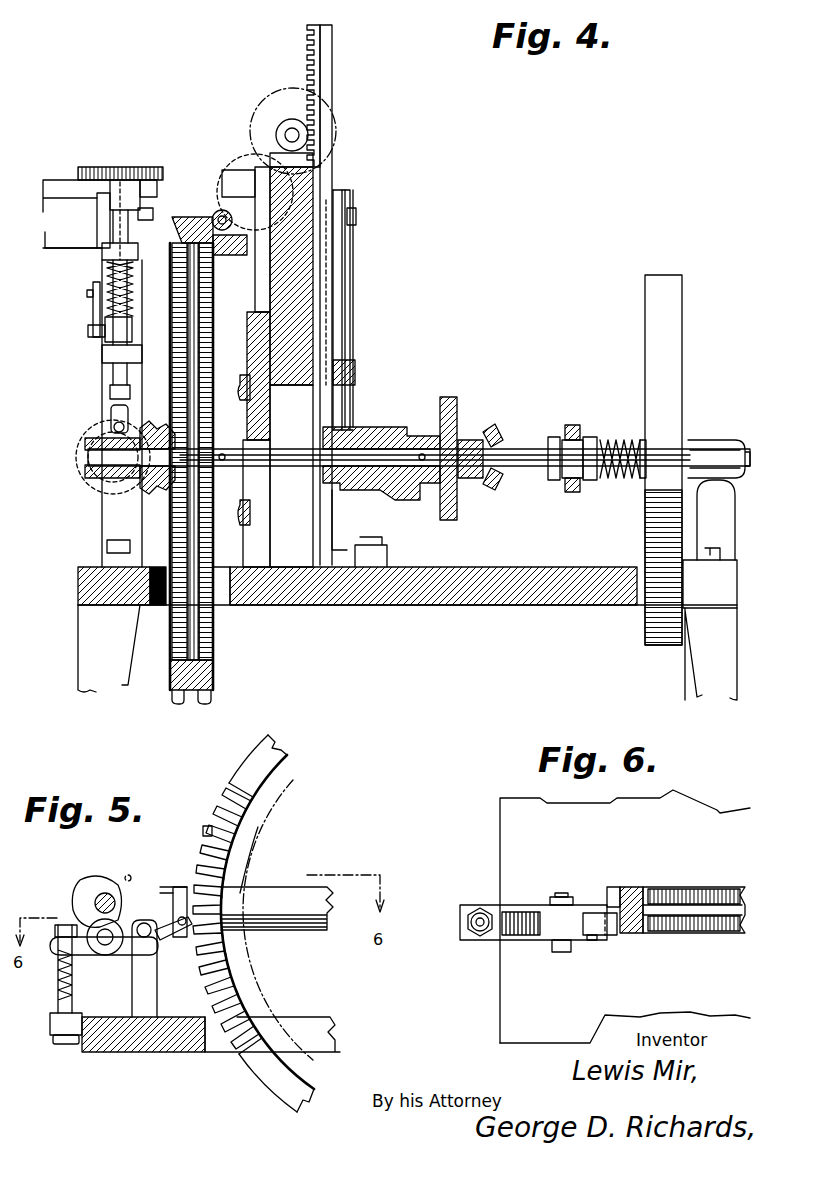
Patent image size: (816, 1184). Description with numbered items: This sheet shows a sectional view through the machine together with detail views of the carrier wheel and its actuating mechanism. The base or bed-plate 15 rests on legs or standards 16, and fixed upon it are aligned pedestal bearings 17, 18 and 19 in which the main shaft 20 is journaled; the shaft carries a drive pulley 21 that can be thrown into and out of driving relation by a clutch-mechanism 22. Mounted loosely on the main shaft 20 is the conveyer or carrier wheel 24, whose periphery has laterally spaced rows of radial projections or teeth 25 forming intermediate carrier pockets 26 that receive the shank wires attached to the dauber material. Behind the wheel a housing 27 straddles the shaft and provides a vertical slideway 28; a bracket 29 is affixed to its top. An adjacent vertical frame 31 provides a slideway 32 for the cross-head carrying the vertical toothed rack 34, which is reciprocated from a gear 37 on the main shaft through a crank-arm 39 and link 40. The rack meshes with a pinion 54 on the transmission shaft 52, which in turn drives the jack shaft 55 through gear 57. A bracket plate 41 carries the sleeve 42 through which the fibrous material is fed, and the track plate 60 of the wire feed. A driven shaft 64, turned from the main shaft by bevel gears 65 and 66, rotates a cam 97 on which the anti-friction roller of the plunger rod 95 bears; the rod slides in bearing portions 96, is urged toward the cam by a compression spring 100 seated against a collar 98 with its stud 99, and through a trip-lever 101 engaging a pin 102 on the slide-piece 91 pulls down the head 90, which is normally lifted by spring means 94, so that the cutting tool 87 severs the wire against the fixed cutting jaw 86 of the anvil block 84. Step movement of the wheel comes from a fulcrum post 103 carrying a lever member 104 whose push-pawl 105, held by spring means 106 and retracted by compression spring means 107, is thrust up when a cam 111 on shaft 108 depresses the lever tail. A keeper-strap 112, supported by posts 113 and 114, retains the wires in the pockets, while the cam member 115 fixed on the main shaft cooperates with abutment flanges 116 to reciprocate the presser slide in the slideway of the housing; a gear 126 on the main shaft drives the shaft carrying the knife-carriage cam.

In FIG. 4, the base or bed-plate 15 is at (522, 600).
In FIG. 5, the base or bed-plate 15 is at (165, 1045).
In FIG. 4, the legs or standards 16 is at (78, 646).
In FIG. 4, the pedestal bearing 17 is at (723, 444).
In FIG. 4, the pedestal bearing 18 is at (390, 426).
In FIG. 4, the pedestal bearing 19 is at (102, 520).
In FIG. 4, the main shaft 20 is at (518, 448).
In FIG. 4, the drive pulley 21 is at (648, 350).
In FIG. 4, the clutch-mechanism 22 is at (562, 484).
In FIG. 4, the conveyer or carrier wheel 24 is at (215, 680).
In FIG. 5, the conveyer or carrier wheel 24 is at (270, 778).
In FIG. 6, the conveyer or carrier wheel 24 is at (638, 887).
In FIG. 4, the radial projections or teeth 25 is at (176, 705).
In FIG. 5, the radial projections or teeth 25 is at (205, 830).
In FIG. 6, the radial projections or teeth 25 is at (610, 887).
In FIG. 5, the carrier pockets 26 is at (196, 855).
In FIG. 4, the housing 27 is at (300, 345).
In FIG. 4, the vertical slideway 28 is at (262, 290).
In FIG. 4, the bracket 29 is at (252, 112).
In FIG. 4, the vertical frame 31 is at (338, 268).
In FIG. 4, the slideway 32 is at (352, 350).
In FIG. 4, the vertical toothed rack 34 is at (310, 80).
In FIG. 4, the gear 37 is at (455, 398).
In FIG. 4, the crank-arm 39 is at (353, 400).
In FIG. 4, the link 40 is at (352, 290).
In FIG. 4, the bracket plate 41 is at (60, 178).
In FIG. 4, the sleeve 42 is at (228, 186).
In FIG. 4, the transmission shaft 52 is at (350, 200).
In FIG. 4, the pinion 54 is at (333, 178).
In FIG. 4, the jack shaft 55 is at (286, 130).
In FIG. 4, the gear 57 is at (272, 106).
In FIG. 4, the track plate 60 is at (64, 252).
In FIG. 4, the driven shaft 64 is at (95, 438).
In FIG. 4, the bevel gear 65 is at (148, 428).
In FIG. 4, the bevel gear 66 is at (88, 446).
In FIG. 4, the anvil block 84 is at (97, 220).
In FIG. 4, the fixed cutting jaw 86 is at (146, 222).
In FIG. 4, the cutting tool 87 is at (150, 214).
In FIG. 4, the vertically reciprocable head 90 is at (128, 166).
In FIG. 4, the slide-piece 91 is at (118, 225).
In FIG. 4, the spring means 94 is at (152, 178).
In FIG. 4, the plunger rod 95 is at (102, 351).
In FIG. 4, the bearing portions 96 is at (106, 254).
In FIG. 4, the cam 97 is at (85, 476).
In FIG. 4, the collar 98 is at (133, 328).
In FIG. 4, the stud 99 is at (88, 331).
In FIG. 4, the compression spring 100 is at (134, 290).
In FIG. 4, the trip-lever 101 is at (93, 305).
In FIG. 4, the pin 102 is at (87, 293).
In FIG. 5, the fulcrum post 103 is at (138, 985).
In FIG. 6, the fulcrum post 103 is at (562, 953).
In FIG. 5, the lever member 104 is at (126, 946).
In FIG. 6, the lever member 104 is at (545, 942).
In FIG. 5, the push-pawl 105 is at (173, 890).
In FIG. 6, the push-pawl 105 is at (598, 940).
In FIG. 5, the spring means 106 is at (170, 940).
In FIG. 5, the compression spring means 107 is at (58, 983).
In FIG. 5, the shaft 108 is at (128, 876).
In FIG. 5, the cam 111 is at (80, 890).
In FIG. 4, the keeper-strap 112 is at (214, 212).
In FIG. 4, the supporting post 113 is at (236, 176).
In FIG. 4, the supporting post 114 is at (250, 344).
In FIG. 4, the block 115 is at (250, 424).
In FIG. 4, the abutment flanges 116 is at (240, 392).
In FIG. 4, the gear 126 is at (497, 426).